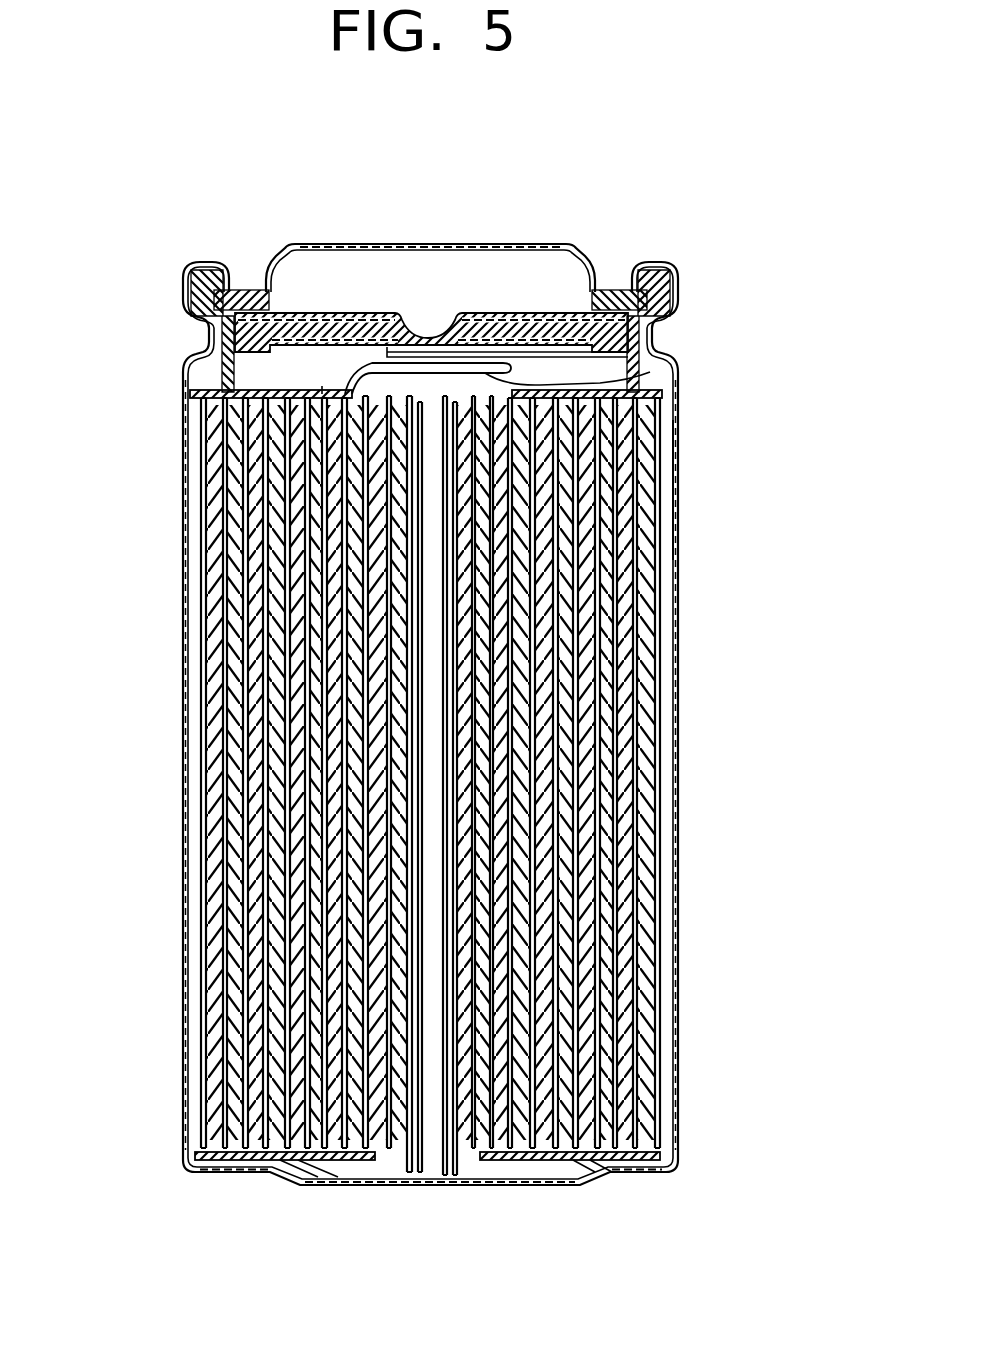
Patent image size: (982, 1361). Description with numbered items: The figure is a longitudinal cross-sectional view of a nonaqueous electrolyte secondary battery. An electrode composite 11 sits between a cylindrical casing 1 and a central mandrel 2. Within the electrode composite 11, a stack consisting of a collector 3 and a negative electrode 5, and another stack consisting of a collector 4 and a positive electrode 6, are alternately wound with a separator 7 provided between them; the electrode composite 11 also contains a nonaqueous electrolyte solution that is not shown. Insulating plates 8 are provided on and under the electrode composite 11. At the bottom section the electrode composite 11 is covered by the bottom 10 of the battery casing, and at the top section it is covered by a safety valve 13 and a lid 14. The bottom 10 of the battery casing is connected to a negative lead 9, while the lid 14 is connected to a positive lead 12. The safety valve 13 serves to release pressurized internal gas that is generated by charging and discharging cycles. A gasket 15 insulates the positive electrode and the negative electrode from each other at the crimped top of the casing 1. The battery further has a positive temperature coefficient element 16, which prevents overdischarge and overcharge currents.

The cylindrical casing 1 is at (183, 987).
The mandrel 2 is at (446, 1178).
The collector 3 is at (225, 705).
The collector 4 is at (258, 915).
The negative electrode 5 is at (215, 795).
The positive electrode 6 is at (255, 1047).
The separator 7 is at (232, 1107).
The insulating plates 8 is at (322, 385).
The negative lead 9 is at (288, 1186).
The bottom of the battery casing 10 is at (411, 1176).
The electrode composite 11 is at (655, 497).
The positive lead 12 is at (650, 372).
The safety valve 13 is at (545, 312).
The lid 14 is at (400, 244).
The gasket 15 is at (198, 266).
The positive temperature coefficient (PTC) element 16 is at (245, 290).